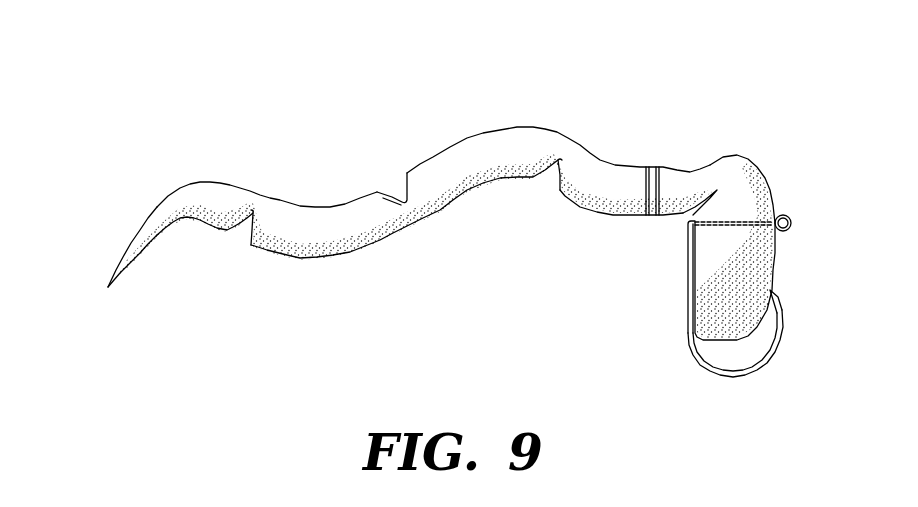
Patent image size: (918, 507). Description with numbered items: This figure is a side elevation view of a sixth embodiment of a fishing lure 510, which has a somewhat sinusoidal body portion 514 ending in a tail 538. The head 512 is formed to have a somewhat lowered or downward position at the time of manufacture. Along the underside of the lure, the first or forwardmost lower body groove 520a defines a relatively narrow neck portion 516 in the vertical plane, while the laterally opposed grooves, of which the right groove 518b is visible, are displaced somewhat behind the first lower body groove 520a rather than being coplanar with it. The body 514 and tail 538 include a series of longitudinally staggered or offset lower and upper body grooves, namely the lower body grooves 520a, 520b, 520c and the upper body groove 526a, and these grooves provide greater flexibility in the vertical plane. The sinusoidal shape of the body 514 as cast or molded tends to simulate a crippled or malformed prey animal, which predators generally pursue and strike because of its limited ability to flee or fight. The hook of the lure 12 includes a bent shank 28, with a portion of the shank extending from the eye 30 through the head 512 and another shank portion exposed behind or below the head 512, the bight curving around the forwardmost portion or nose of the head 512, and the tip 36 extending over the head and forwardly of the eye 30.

The lure 510 is at (110, 73).
The body portion 514 is at (500, 132).
The tail 538 is at (152, 215).
The upper body groove 526a is at (393, 184).
The first lower body groove 520a is at (693, 214).
The lower body groove 520b is at (550, 176).
The lower body groove 520c is at (240, 237).
The right groove 518b is at (647, 166).
The neck portion 516 is at (718, 158).
The eye 30 is at (790, 218).
The bent shank 28 is at (690, 291).
The head 512 is at (693, 320).
The tip 36 is at (774, 302).
The hook 12 is at (760, 369).